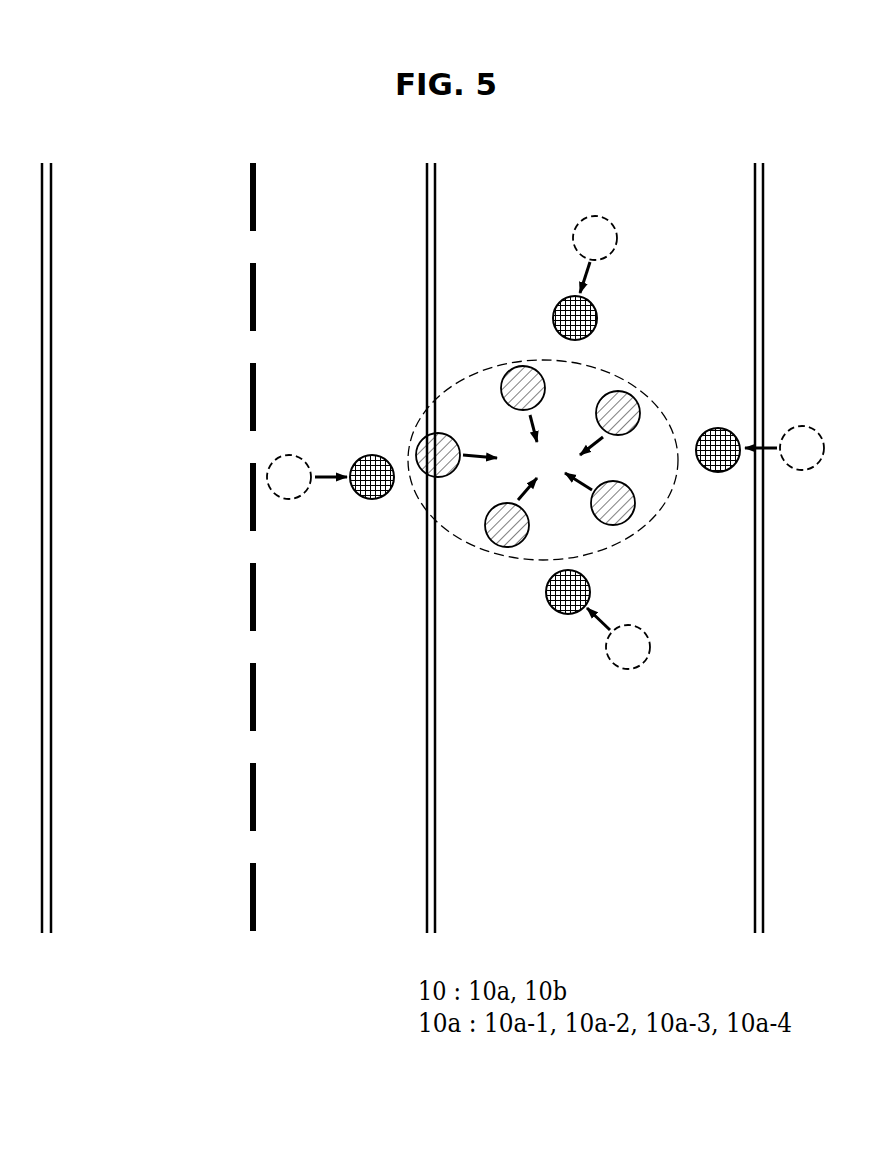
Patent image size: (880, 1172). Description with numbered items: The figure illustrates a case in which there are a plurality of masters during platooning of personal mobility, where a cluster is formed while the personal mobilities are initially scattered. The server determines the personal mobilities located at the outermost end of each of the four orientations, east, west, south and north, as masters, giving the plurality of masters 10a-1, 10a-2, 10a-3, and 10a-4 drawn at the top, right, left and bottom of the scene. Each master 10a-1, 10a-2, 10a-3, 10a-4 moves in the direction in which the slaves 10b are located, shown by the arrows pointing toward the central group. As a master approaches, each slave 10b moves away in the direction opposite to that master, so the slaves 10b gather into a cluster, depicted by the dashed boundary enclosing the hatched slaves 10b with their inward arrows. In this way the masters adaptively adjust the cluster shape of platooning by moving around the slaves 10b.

The slave 10b is at (623, 378).
The master 10a-1 is at (597, 217).
The master 10a-2 is at (803, 428).
The master 10a-3 is at (289, 457).
The master 10a-4 is at (627, 667).